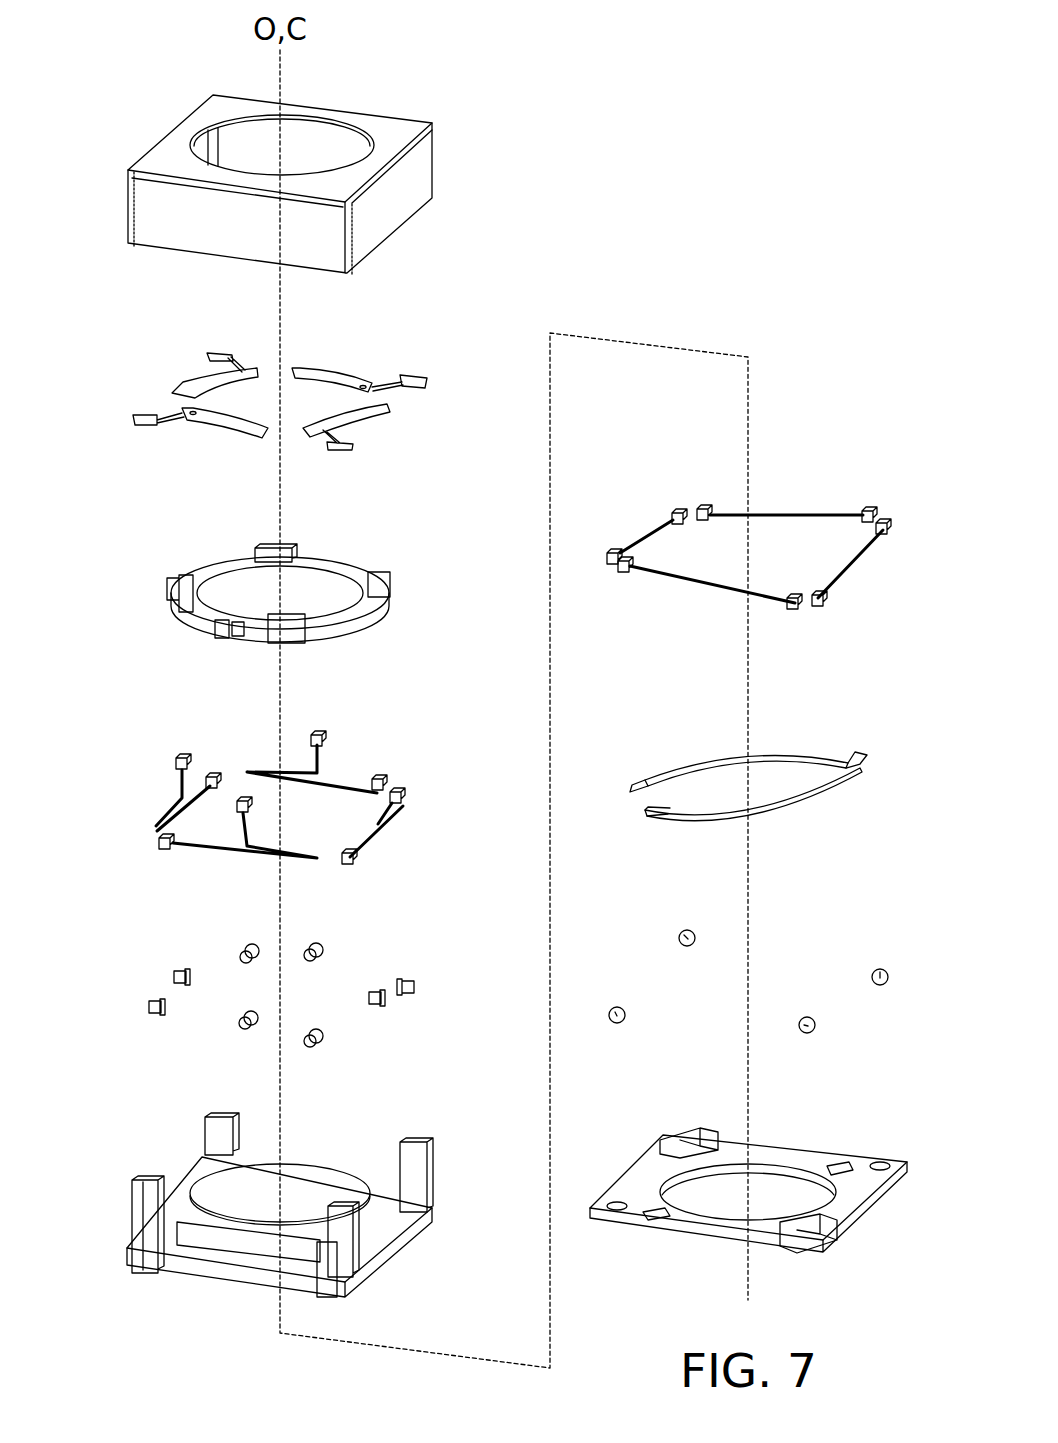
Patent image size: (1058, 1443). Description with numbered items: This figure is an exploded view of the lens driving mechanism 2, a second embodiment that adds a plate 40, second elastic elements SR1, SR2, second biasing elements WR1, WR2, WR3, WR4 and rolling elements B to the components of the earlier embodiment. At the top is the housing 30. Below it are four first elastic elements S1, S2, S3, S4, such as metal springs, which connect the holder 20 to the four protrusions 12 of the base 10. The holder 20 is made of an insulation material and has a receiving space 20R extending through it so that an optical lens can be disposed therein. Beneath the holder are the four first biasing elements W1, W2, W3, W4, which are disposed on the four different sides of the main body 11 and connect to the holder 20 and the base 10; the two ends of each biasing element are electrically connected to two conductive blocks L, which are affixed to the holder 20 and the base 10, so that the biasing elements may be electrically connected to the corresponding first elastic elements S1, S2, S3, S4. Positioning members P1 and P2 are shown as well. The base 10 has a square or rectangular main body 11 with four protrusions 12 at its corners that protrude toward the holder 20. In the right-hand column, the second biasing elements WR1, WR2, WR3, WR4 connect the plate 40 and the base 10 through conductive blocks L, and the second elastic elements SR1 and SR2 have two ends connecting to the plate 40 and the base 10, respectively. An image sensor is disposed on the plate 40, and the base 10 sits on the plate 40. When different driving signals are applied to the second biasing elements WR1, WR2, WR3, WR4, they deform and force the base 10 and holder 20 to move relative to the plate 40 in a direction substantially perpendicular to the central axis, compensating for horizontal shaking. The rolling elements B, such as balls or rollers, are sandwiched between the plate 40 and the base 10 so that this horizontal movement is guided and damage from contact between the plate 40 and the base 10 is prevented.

The lens driving mechanism 2 is at (52, 44).
The housing 30 is at (388, 202).
The first elastic element S1 is at (210, 423).
The first elastic element S2 is at (357, 423).
The first elastic element S3 is at (345, 377).
The first elastic element S4 is at (198, 380).
The holder 20 is at (323, 563).
The receiving space 20R is at (345, 583).
The first biasing element W1 is at (243, 855).
The first biasing element W2 is at (375, 840).
The first biasing element W3 is at (340, 785).
The first biasing element W4 is at (162, 815).
The conductive block L is at (182, 757).
The positioning member P1 is at (168, 975).
The positioning member P2 is at (240, 953).
The base 10 is at (285, 1215).
The main body 11 is at (377, 1217).
The protrusion 12 is at (133, 1215).
The second biasing element WR1 is at (723, 588).
The second biasing element WR2 is at (863, 550).
The second biasing element WR3 is at (803, 516).
The second biasing element WR4 is at (643, 530).
The second elastic element SR1 is at (813, 807).
The second elastic element SR2 is at (680, 750).
The rolling element B is at (682, 932).
The plate 40 is at (652, 1182).